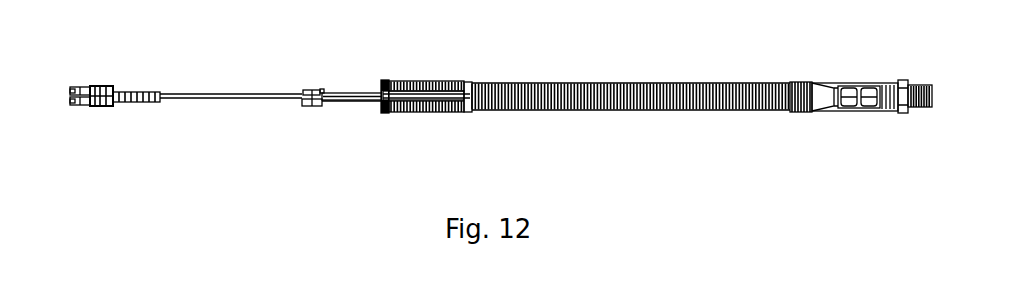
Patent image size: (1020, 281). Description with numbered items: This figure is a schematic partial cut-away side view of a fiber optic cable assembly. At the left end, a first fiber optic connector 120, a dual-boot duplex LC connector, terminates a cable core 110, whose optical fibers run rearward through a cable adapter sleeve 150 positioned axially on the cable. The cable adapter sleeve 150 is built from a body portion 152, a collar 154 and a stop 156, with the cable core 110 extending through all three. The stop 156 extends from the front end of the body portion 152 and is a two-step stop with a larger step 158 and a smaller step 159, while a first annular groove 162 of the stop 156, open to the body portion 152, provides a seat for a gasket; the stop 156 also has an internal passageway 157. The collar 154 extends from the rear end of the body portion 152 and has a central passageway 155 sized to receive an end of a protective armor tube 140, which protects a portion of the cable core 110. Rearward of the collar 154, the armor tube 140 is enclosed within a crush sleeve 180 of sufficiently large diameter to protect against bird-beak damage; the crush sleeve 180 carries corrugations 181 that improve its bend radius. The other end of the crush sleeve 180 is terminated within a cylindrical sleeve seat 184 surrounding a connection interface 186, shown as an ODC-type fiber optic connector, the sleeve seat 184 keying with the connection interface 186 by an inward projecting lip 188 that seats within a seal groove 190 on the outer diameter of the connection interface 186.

The cable core 110 is at (199, 94).
The first fiber optic connector 120 is at (92, 87).
The protective armor tube 140 is at (455, 93).
The cable adapter sleeve 150 is at (358, 100).
The body portion 152 is at (336, 100).
The collar 154 is at (398, 82).
The central passageway 155 is at (392, 97).
The stop 156 is at (312, 90).
The internal passageway 157 is at (344, 100).
The larger step 158 is at (312, 106).
The smaller step 159 is at (302, 90).
The first annular groove 162 is at (322, 89).
The crush sleeve 180 is at (555, 83).
The corrugations 181 is at (673, 83).
The sleeve seat 184 is at (805, 83).
The connection interface 186 is at (848, 98).
The inward projecting lip 188 is at (903, 111).
The seal groove 190 is at (402, 83).